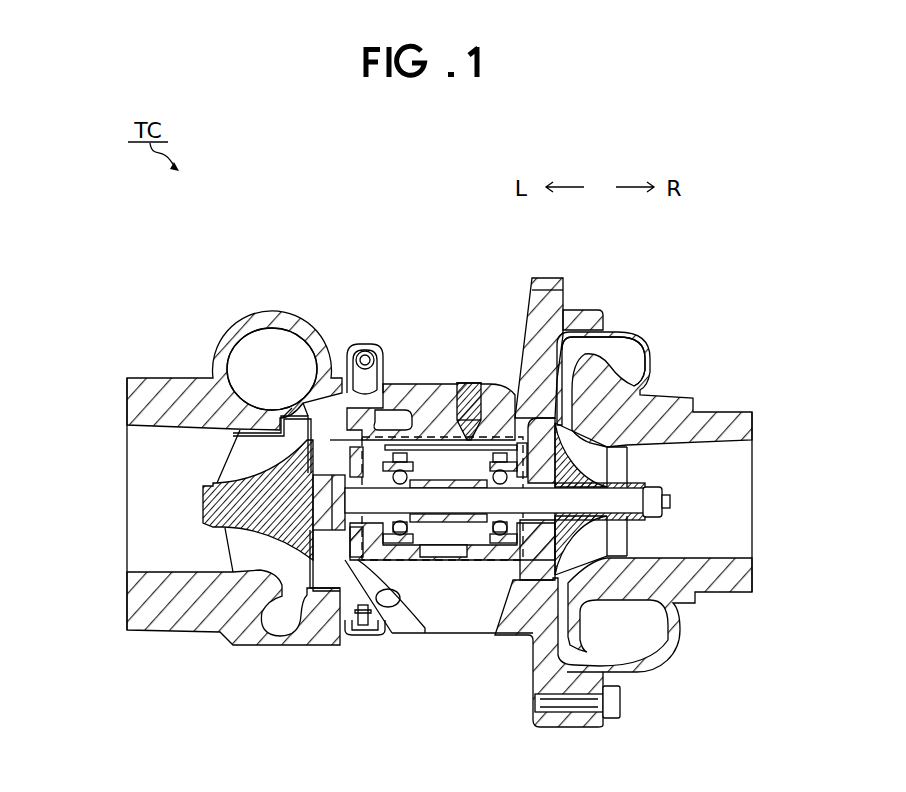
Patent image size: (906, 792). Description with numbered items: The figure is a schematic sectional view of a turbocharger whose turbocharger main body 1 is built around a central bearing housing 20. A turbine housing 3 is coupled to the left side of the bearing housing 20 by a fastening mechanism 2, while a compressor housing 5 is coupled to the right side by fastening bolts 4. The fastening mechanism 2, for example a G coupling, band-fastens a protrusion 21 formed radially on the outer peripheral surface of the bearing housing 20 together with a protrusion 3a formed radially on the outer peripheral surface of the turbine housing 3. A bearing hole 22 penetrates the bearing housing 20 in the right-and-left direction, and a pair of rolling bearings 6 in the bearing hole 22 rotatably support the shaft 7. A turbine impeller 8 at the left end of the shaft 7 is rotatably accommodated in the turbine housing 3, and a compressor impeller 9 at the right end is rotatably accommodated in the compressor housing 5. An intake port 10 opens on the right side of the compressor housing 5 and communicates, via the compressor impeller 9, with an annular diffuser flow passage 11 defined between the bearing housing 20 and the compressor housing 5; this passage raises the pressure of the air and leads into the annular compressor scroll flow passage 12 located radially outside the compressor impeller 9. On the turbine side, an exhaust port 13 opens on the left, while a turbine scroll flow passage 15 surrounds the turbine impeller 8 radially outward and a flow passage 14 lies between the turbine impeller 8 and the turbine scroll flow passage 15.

The turbocharger main body 1 is at (198, 247).
The fastening mechanism 2 is at (385, 344).
The turbine housing 3 is at (331, 332).
The protrusion 3a is at (357, 640).
The fastening bolts 4 is at (620, 703).
The compressor housing 5 is at (581, 300).
The rolling bearings 6 is at (467, 438).
The shaft 7 is at (430, 530).
The turbine impeller 8 is at (250, 552).
The compressor impeller 9 is at (630, 465).
The intake port 10 is at (752, 558).
The diffuser flow passage 11 is at (515, 300).
The compressor scroll flow passage 12 is at (612, 343).
The exhaust port 13 is at (127, 456).
The flow passage 14 is at (290, 406).
The turbine scroll flow passage 15 is at (267, 340).
The bearing housing 20 is at (553, 278).
The protrusion 21 is at (372, 625).
The bearing hole 22 is at (450, 503).